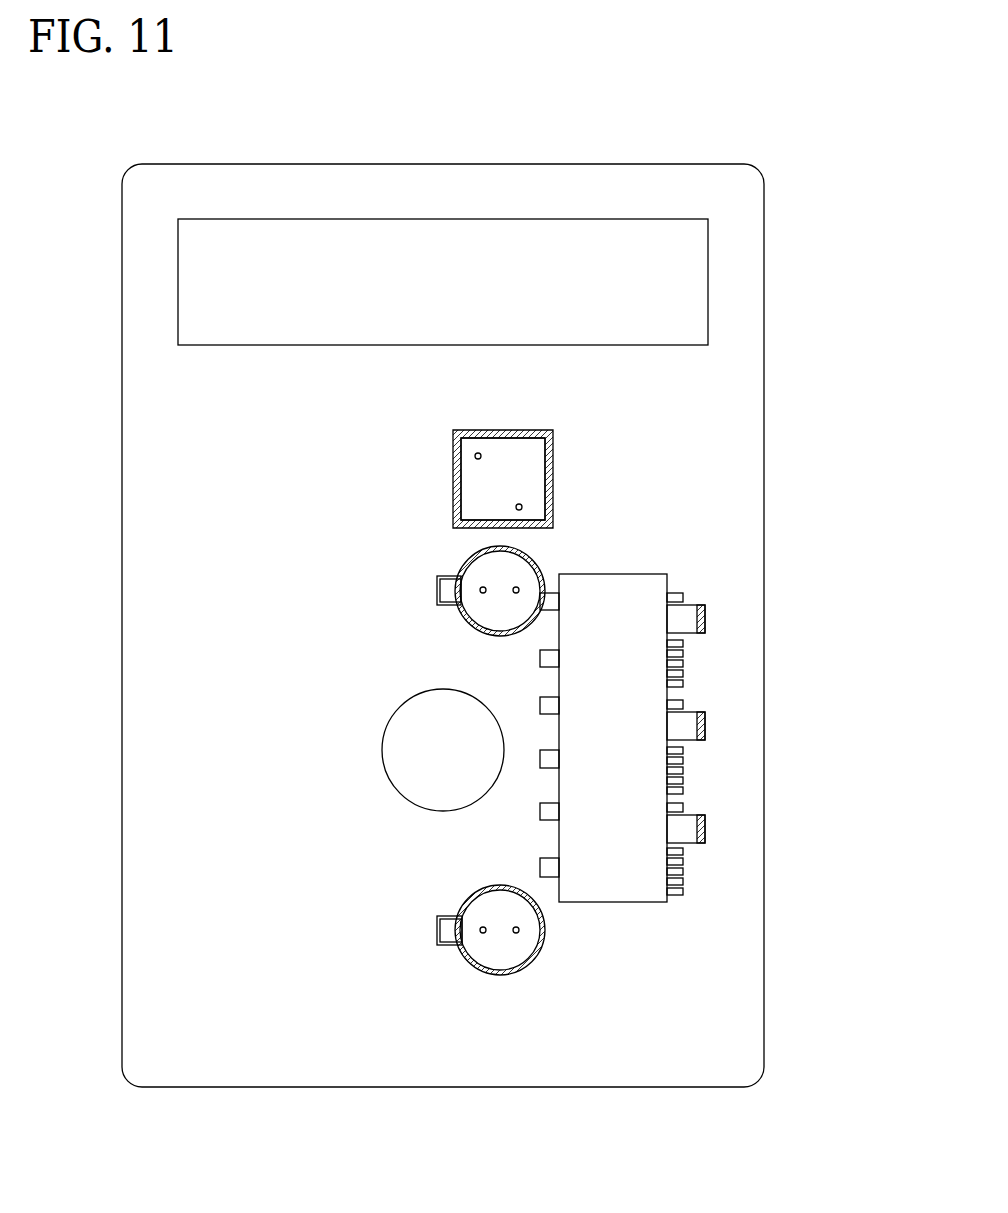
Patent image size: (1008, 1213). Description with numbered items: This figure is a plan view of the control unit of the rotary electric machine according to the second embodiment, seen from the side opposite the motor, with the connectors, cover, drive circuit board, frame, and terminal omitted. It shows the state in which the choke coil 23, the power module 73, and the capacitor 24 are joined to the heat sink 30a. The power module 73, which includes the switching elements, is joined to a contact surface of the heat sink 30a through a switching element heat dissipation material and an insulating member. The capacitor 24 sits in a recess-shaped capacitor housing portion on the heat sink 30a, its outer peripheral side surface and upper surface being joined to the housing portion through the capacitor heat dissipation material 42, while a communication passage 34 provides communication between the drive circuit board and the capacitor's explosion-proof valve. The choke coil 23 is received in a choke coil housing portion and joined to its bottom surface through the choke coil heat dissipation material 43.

The heat sink 30a is at (750, 1034).
The choke coil heat dissipation material 43 is at (552, 442).
The choke coil 23 is at (514, 449).
The capacitor 24 is at (520, 583).
The capacitor heat dissipation material 42 is at (465, 555).
The communication passage 34 is at (448, 595).
The power module 73 is at (610, 739).